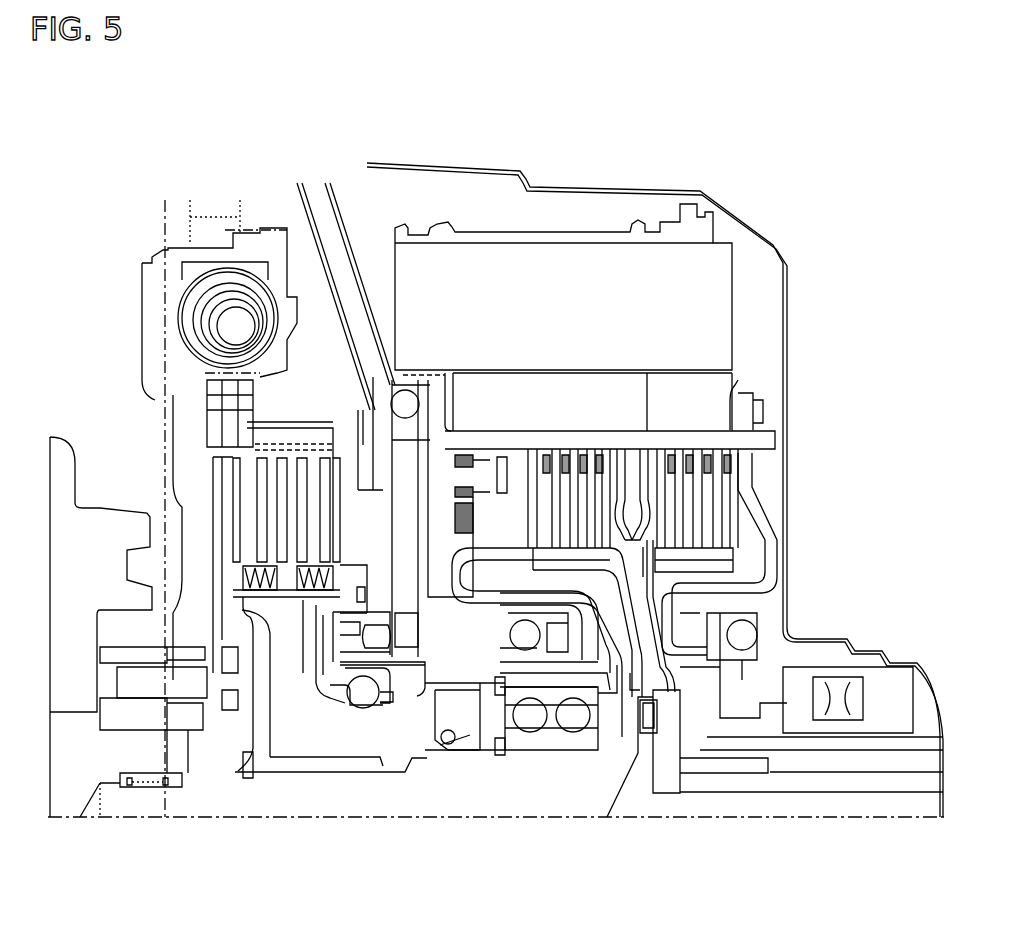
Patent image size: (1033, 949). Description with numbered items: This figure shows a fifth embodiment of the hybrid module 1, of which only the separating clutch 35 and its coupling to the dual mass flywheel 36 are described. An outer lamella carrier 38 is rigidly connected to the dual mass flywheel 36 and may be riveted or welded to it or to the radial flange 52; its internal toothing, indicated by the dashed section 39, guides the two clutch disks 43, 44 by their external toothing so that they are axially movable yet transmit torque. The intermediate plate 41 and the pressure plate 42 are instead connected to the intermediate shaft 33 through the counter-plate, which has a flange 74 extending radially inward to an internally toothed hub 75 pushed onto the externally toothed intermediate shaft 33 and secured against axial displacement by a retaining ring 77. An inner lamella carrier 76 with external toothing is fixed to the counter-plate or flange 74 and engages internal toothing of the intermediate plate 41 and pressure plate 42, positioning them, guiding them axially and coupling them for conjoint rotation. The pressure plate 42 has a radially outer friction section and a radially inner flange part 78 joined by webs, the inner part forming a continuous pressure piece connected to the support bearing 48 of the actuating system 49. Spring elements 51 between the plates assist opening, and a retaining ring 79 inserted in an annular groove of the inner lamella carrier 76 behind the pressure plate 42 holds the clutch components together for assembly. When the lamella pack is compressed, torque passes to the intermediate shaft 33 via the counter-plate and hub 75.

The hybrid module 1 is at (612, 141).
The intermediate shaft 33 is at (570, 807).
The separating clutch 35 is at (312, 386).
The dual mass flywheel 36 is at (197, 190).
The outer lamella carrier 38 is at (262, 412).
The section 39 is at (330, 445).
The intermediate plate 41 is at (290, 520).
The pressure plate 42 is at (340, 557).
The clutch disk 43 is at (253, 468).
The clutch disk 44 is at (313, 497).
The support bearing 48 is at (370, 710).
The actuating system 49 is at (405, 677).
The spring elements 51 is at (300, 578).
The radial flange 52 is at (215, 388).
The flange 74 is at (258, 720).
The internally toothed hub 75 is at (336, 760).
The inner lamella carrier 76 is at (277, 593).
The retaining ring 77 is at (248, 760).
The flange part 78 is at (305, 660).
The retaining ring 79 is at (363, 593).